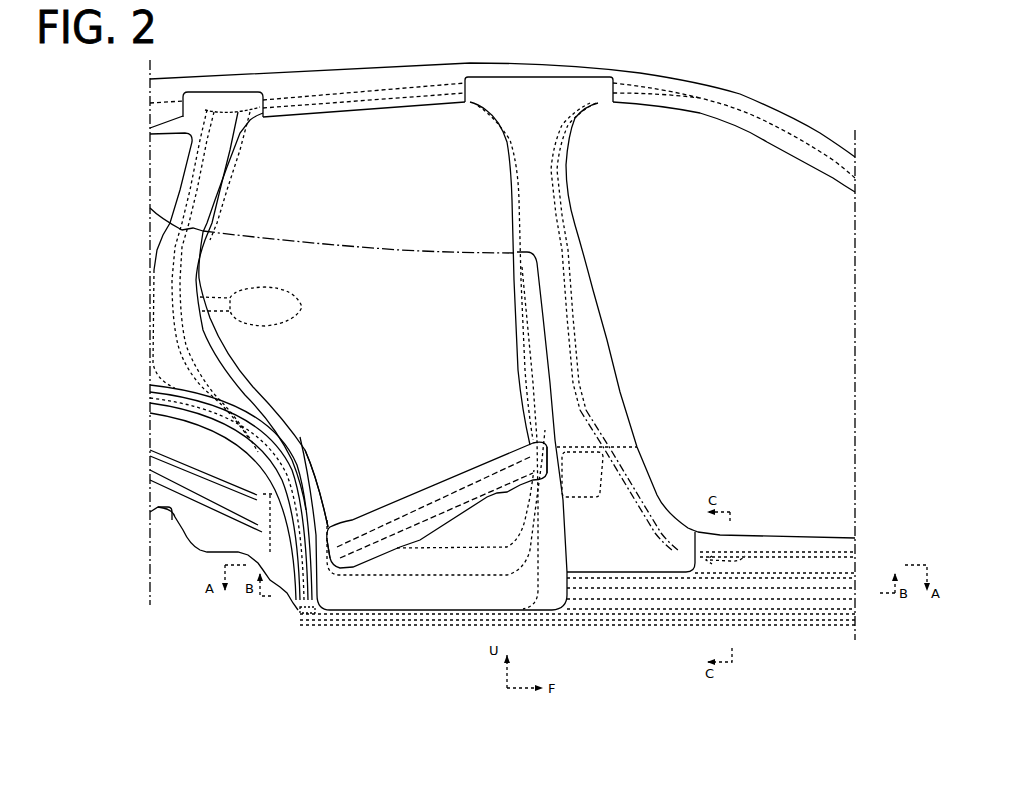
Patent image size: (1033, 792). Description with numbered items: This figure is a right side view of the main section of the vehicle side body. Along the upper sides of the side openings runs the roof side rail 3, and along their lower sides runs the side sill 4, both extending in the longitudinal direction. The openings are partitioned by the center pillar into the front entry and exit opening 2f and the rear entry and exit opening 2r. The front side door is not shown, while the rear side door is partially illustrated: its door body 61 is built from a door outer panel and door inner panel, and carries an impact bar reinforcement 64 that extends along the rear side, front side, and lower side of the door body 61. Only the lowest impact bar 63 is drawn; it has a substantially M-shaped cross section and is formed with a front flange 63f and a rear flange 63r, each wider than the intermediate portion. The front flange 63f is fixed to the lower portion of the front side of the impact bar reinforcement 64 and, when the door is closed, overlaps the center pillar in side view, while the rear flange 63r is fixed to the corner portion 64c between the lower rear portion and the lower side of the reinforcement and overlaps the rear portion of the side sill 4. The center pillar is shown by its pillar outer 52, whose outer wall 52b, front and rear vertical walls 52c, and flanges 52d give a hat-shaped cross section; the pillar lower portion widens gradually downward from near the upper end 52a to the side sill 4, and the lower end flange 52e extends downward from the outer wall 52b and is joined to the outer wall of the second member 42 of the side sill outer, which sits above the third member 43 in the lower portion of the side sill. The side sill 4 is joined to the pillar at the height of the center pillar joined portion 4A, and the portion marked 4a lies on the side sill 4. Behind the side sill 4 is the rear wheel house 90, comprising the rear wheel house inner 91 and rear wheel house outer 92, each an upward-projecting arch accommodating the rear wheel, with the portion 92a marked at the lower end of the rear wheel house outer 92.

The roof side rail 3 is at (368, 64).
The rear entry and exit opening 2r is at (340, 198).
The front entry and exit opening 2f is at (703, 268).
The rear wheel house outer 92 is at (162, 414).
The rear wheel house inner 91 is at (169, 521).
The rear wheel house 90 is at (205, 567).
The quarter panel lower end 92a is at (296, 600).
The door body 61 is at (409, 236).
The impact bar reinforcement 64 is at (517, 377).
The corner portion 64c is at (331, 506).
The impact bar 63 is at (442, 488).
The rear flange 63r is at (352, 520).
The front flange 63f is at (513, 452).
The pillar outer 52 is at (595, 232).
The upper end 52a is at (636, 460).
The outer wall 52b is at (543, 151).
The vertical wall 52c is at (563, 173).
The flange 52d is at (570, 194).
The lower end flange 52e is at (628, 568).
The side sill 4 is at (788, 526).
The center pillar joined portion 4A is at (745, 556).
The side sill upper surface 4a is at (821, 526).
The second member 42 is at (843, 537).
The third member 43 is at (800, 626).